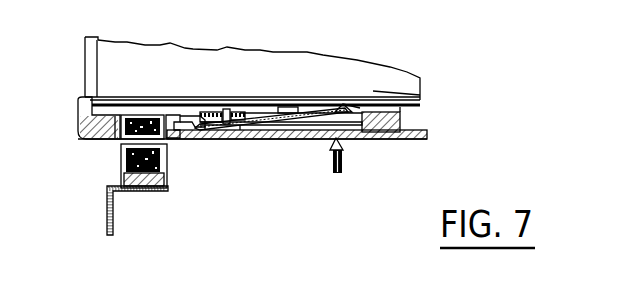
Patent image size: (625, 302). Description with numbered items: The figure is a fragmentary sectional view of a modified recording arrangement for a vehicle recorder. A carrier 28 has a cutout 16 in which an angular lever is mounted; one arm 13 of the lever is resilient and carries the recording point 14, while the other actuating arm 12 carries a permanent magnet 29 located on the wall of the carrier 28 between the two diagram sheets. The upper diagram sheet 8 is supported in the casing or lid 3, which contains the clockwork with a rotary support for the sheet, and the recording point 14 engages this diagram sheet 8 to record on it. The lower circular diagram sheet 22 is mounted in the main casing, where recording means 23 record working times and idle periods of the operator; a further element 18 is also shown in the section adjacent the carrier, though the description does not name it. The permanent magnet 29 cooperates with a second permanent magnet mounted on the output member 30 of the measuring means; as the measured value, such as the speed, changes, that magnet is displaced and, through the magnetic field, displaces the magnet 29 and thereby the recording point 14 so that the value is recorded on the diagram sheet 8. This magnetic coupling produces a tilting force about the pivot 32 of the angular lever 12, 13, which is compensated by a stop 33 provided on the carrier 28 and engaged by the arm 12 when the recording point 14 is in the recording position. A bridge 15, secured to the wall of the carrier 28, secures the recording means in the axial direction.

The casing 3 is at (205, 53).
The diagram sheet 8 is at (122, 105).
The actuating arm 12 is at (173, 146).
The resilient arm 13 is at (299, 118).
The recording point 14 is at (347, 110).
The bridge 15 is at (233, 111).
The cutout 16 is at (312, 124).
The block 18 is at (392, 105).
The circular diagram sheet 22 is at (403, 136).
The recording means 23 is at (343, 167).
The carrier 28 is at (80, 128).
The permanent magnet 29 is at (118, 139).
The output member 30 is at (114, 230).
The pivot 32 is at (225, 138).
The stop 33 is at (173, 139).